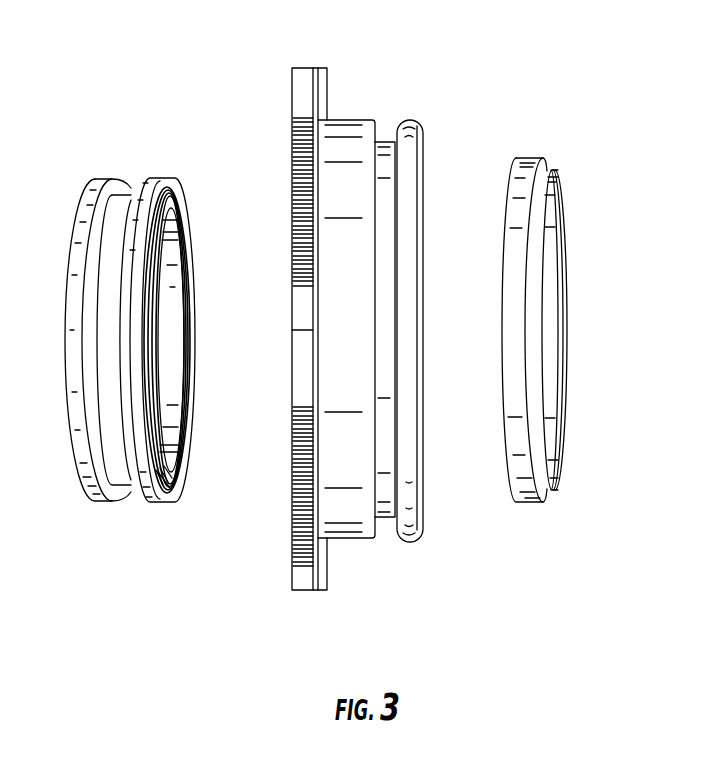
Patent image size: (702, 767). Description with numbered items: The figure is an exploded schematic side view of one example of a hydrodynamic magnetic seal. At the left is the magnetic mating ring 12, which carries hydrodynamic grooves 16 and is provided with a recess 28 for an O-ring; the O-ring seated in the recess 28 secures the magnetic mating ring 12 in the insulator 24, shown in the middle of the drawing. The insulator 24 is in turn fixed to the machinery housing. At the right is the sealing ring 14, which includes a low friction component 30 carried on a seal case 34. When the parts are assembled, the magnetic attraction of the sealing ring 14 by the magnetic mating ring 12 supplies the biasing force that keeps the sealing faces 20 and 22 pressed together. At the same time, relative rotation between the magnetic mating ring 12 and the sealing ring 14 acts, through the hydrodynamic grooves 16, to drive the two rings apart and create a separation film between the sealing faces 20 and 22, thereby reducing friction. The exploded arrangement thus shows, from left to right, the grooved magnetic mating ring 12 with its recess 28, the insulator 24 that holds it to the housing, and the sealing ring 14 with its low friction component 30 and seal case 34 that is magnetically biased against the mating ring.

The magnetic mating ring 12 is at (98, 149).
The sealing ring 14 is at (535, 154).
The hydrodynamic grooves 16 is at (176, 194).
The sealing face 20 is at (174, 474).
The sealing face 22 is at (509, 188).
The insulator 24 is at (345, 118).
The recess 28 is at (133, 498).
The low friction component 30 is at (515, 310).
The seal case 34 is at (525, 498).